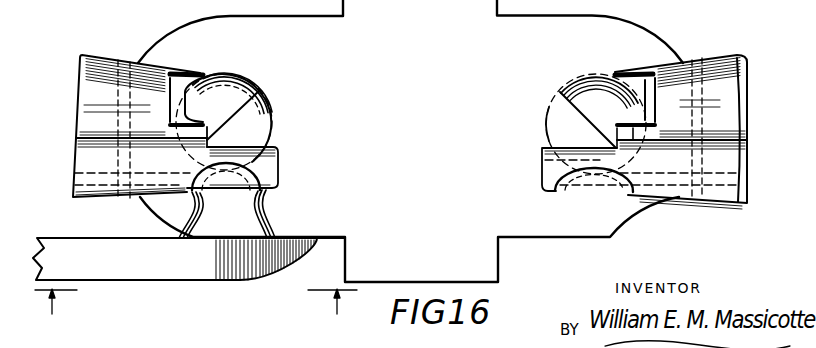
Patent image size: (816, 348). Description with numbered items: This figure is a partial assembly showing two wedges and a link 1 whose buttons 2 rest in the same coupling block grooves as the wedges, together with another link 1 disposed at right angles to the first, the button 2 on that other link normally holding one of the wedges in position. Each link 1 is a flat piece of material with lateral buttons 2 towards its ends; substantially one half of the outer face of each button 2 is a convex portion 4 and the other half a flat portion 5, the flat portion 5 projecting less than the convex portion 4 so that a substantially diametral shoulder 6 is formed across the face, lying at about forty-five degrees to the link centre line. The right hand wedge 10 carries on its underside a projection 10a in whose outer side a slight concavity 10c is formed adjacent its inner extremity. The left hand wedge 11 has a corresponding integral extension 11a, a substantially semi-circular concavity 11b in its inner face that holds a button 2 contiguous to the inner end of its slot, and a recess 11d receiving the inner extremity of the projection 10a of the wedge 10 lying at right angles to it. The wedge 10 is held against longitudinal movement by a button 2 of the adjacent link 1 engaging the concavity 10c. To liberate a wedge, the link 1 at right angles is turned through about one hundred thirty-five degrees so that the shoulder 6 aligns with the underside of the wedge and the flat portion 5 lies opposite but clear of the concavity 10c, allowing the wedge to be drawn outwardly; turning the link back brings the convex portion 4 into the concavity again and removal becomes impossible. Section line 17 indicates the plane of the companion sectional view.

The link 1 is at (358, 141).
The button 2 is at (275, 122).
The convex portion 4 is at (234, 81).
The flat portion 5 is at (216, 193).
The shoulder 6 is at (262, 95).
The right hand wedge 10 is at (748, 116).
The projection 10a is at (543, 175).
The concavity 10c is at (292, 152).
The left hand wedge 11 is at (78, 107).
The integral extension 11a is at (75, 169).
The semi-circular concavity 11b is at (185, 131).
The recess 11d is at (183, 72).
The section line 17 is at (196, 316).